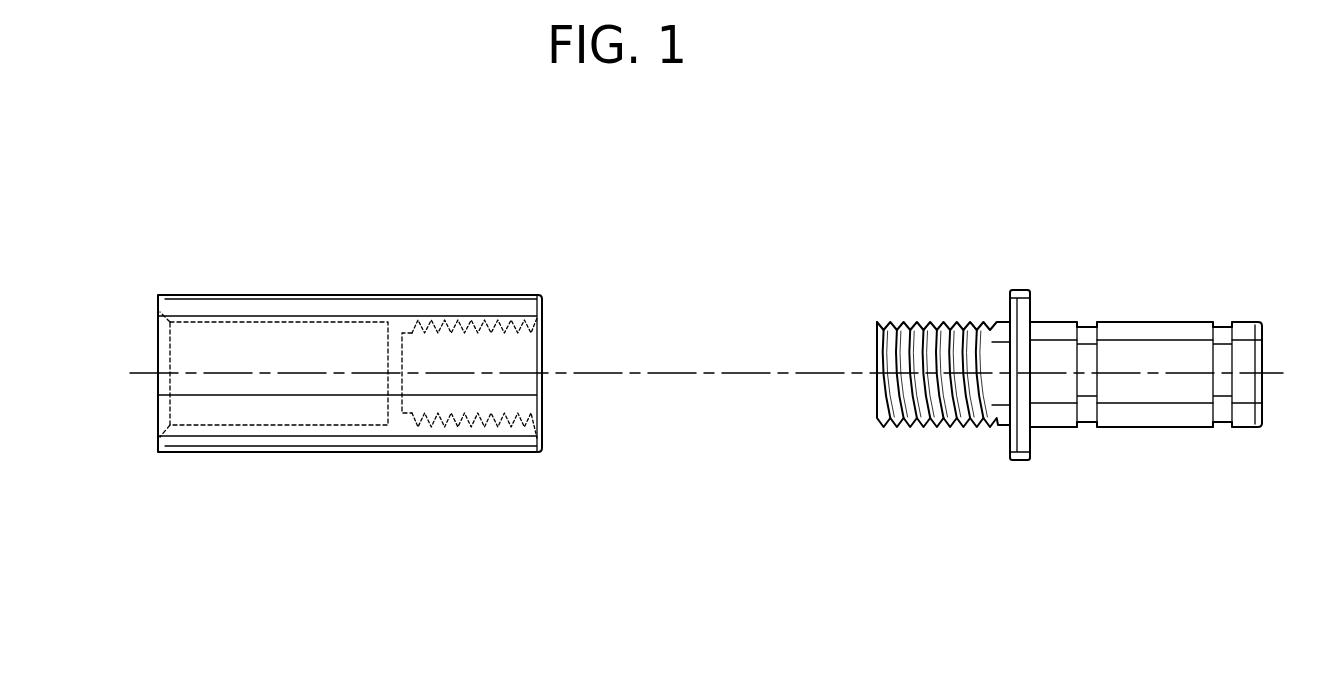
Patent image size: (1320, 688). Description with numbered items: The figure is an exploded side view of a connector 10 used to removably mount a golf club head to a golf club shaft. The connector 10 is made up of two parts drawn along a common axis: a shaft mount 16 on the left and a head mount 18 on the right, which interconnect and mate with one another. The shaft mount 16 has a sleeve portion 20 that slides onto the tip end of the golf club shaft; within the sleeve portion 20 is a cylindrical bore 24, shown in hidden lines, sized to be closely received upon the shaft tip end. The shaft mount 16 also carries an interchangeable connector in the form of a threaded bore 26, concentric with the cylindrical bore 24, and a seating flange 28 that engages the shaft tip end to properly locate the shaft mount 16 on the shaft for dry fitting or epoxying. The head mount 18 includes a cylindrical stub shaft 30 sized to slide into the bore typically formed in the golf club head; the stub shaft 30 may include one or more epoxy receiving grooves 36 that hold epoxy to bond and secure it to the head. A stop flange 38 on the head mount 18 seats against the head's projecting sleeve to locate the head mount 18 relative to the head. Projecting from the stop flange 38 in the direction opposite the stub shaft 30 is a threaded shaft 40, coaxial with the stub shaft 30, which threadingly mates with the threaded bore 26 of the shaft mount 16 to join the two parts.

The connector 10 is at (889, 124).
The shaft mount 16 is at (385, 462).
The head mount 18 is at (1189, 444).
The sleeve portion 20 is at (224, 285).
The cylindrical bore 24 is at (195, 424).
The threaded bore 26 is at (452, 414).
The seating flange 28 is at (422, 387).
The cylindrical stub shaft 30 is at (1133, 325).
The epoxy receiving grooves 36 is at (1087, 325).
The stop flange 38 is at (1017, 287).
The threaded shaft 40 is at (930, 325).